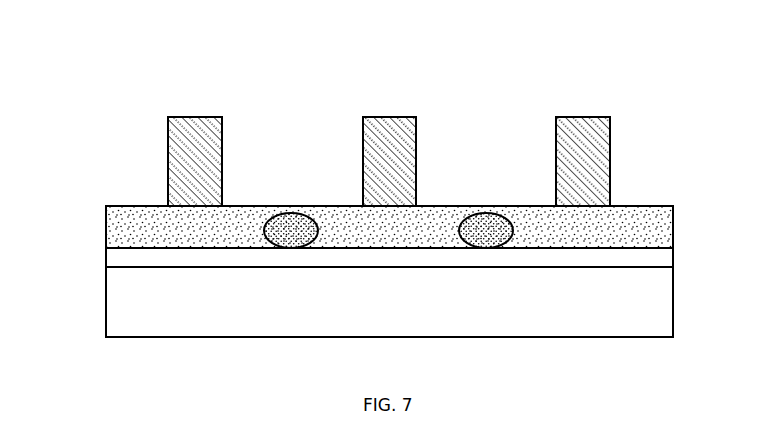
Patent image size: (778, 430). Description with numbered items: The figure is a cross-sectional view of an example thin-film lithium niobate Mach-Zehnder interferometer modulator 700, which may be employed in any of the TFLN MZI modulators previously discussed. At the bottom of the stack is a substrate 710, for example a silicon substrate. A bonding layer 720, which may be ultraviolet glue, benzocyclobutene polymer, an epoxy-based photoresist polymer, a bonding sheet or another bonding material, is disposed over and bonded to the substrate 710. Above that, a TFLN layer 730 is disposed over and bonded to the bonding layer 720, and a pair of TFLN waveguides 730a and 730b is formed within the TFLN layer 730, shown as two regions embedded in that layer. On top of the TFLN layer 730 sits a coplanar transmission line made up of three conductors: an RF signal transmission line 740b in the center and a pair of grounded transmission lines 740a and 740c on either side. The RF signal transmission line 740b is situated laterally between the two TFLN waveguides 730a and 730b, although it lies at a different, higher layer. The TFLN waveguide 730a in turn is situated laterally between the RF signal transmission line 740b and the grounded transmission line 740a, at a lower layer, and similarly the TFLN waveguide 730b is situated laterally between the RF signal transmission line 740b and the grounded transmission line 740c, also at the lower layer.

The TFLN MZI modulator 700 is at (478, 46).
The substrate 710 is at (389, 302).
The bonding layer 720 is at (645, 257).
The TFLN layer 730 is at (120, 222).
The TFLN waveguide 730a is at (292, 213).
The TFLN waveguide 730b is at (486, 213).
The grounded transmission line 740a is at (193, 117).
The RF signal transmission line 740b is at (388, 117).
The grounded transmission line 740c is at (582, 117).